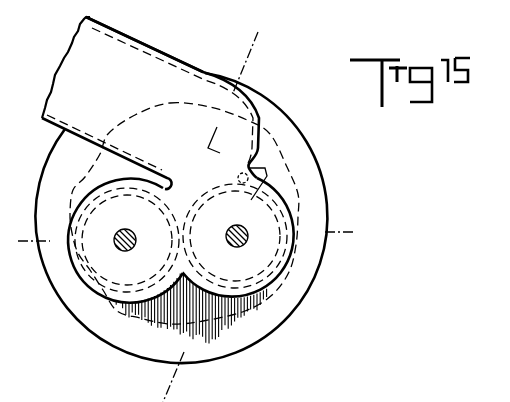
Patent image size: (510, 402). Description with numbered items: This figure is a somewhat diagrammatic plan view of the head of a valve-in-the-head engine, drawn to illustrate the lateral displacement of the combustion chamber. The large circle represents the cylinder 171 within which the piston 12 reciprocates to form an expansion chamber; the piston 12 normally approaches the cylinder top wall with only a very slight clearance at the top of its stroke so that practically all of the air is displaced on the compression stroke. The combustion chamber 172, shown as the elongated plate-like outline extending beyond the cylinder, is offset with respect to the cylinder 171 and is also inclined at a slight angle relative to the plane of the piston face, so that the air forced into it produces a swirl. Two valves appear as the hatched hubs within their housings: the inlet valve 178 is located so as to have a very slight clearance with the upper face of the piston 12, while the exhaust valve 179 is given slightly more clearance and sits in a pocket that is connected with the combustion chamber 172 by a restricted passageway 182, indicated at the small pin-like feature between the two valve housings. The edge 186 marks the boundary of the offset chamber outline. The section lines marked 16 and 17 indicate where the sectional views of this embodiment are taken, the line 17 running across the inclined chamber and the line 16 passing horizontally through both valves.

The piston 12 is at (283, 177).
The section line 16- 16 is at (23, 243).
The section line 17- 17 is at (257, 32).
The cylinder 171 is at (303, 149).
The combustion chamber 172 is at (124, 101).
The inlet valve 178 is at (143, 222).
The exhaust valve 179 is at (240, 221).
The restricted passageway 182 is at (241, 174).
The plate edge 186 is at (108, 27).